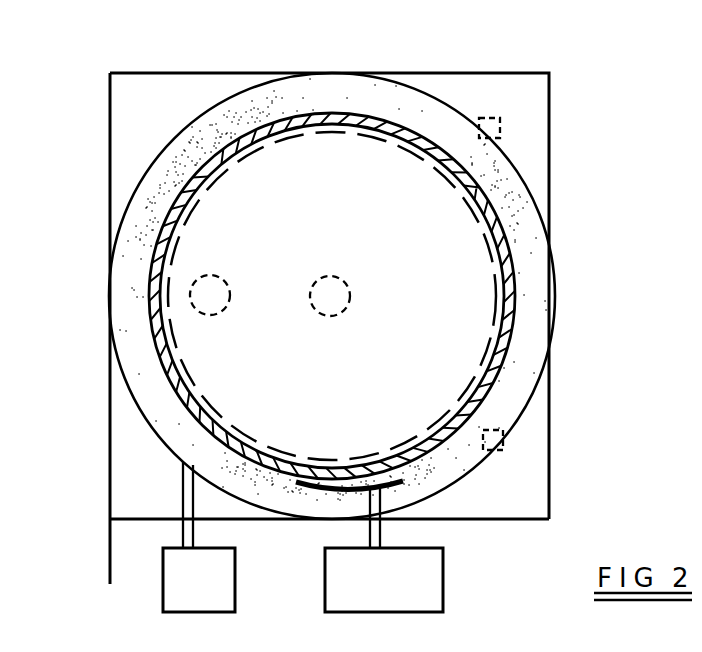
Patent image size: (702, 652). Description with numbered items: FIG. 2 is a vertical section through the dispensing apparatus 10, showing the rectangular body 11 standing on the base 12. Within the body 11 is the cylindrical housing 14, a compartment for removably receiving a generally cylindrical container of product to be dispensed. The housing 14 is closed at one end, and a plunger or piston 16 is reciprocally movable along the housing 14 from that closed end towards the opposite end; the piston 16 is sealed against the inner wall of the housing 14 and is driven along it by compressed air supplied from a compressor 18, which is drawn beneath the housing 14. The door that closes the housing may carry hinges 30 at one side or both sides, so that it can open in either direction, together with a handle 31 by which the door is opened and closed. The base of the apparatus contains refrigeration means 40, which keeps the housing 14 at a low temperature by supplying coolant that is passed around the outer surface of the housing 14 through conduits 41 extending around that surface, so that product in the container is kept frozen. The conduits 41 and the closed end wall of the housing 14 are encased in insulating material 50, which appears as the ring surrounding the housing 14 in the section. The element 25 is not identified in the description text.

The dispensing apparatus 10 is at (125, 58).
The rectangular body 11 is at (205, 73).
The base 12 is at (110, 550).
The cylindrical housing 14 is at (515, 280).
The piston 16 is at (257, 150).
The compressor 18 is at (235, 600).
The channel 25 is at (350, 300).
The hinges 30 is at (500, 128).
The handle 31 is at (230, 303).
The refrigeration means 40 is at (443, 580).
The conduits 41 is at (397, 488).
The insulating material 50 is at (527, 347).